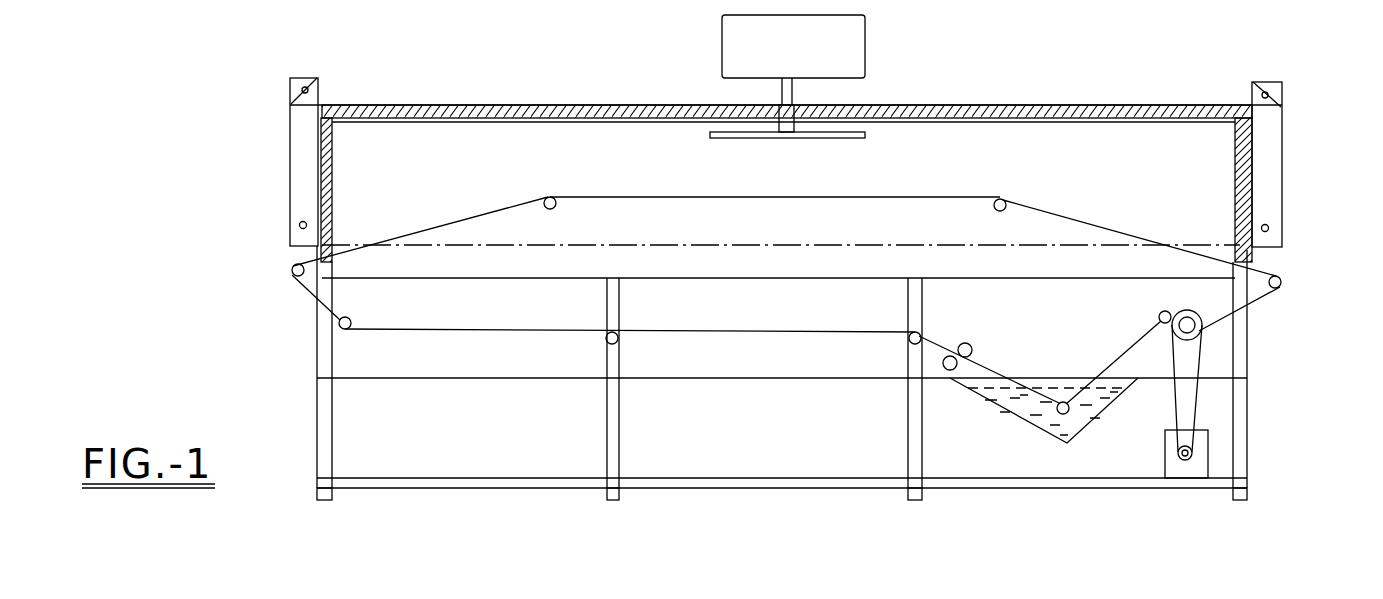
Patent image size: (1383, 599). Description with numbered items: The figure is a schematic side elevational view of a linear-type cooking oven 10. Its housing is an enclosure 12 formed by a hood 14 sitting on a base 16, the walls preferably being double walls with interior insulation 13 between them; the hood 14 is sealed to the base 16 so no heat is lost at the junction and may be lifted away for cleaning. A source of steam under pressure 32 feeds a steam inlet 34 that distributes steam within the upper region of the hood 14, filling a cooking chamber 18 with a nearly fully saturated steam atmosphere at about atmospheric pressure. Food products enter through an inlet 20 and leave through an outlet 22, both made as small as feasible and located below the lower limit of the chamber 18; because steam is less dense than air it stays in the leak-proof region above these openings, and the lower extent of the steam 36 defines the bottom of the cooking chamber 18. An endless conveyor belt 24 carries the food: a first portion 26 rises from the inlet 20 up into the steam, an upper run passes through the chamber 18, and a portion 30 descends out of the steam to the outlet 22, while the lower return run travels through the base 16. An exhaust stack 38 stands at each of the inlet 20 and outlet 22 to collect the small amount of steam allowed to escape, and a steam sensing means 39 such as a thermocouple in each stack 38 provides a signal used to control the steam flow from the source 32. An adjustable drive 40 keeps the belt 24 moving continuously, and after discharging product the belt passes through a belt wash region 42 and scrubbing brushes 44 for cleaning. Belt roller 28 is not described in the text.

The cooking oven 10 is at (519, 99).
The enclosure 12 is at (1123, 101).
The interior insulation 13 is at (1008, 105).
The hood 14 is at (622, 105).
The base 16 is at (340, 380).
The cooking chamber 18 is at (1088, 177).
The inlet 20 is at (300, 249).
The outlet 22 is at (1256, 257).
The conveyor belt 24 is at (457, 213).
The first belt portion 26 is at (512, 200).
The roller 28 is at (650, 196).
The belt portion 30 is at (1137, 234).
The steam source 32 is at (866, 46).
The steam inlet 34 is at (800, 118).
The lower extent of the steam 36 is at (736, 268).
The exhaust stack 38 is at (290, 143).
The steam sensing means 39 is at (299, 224).
The adjustable drive 40 is at (1185, 466).
The belt wash region 42 is at (1068, 432).
The scrubbing brushes 44 is at (959, 372).